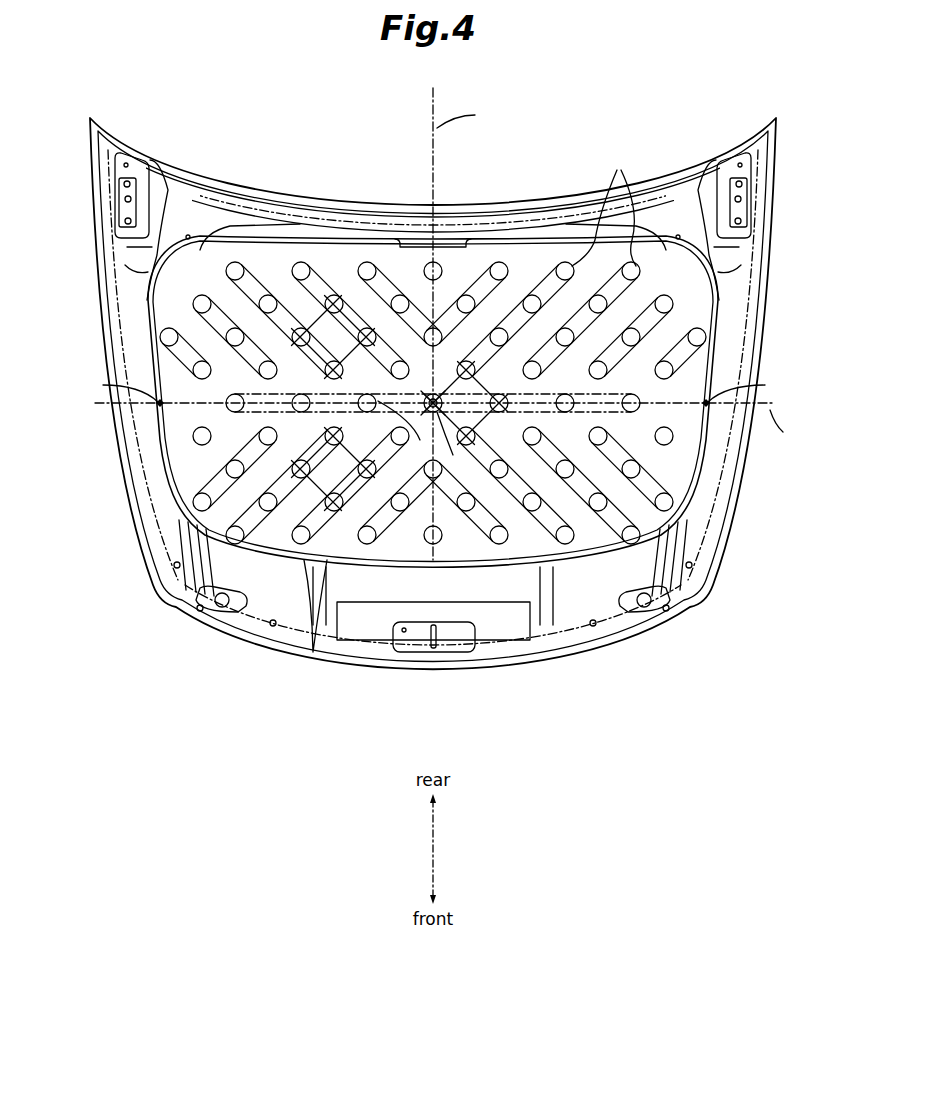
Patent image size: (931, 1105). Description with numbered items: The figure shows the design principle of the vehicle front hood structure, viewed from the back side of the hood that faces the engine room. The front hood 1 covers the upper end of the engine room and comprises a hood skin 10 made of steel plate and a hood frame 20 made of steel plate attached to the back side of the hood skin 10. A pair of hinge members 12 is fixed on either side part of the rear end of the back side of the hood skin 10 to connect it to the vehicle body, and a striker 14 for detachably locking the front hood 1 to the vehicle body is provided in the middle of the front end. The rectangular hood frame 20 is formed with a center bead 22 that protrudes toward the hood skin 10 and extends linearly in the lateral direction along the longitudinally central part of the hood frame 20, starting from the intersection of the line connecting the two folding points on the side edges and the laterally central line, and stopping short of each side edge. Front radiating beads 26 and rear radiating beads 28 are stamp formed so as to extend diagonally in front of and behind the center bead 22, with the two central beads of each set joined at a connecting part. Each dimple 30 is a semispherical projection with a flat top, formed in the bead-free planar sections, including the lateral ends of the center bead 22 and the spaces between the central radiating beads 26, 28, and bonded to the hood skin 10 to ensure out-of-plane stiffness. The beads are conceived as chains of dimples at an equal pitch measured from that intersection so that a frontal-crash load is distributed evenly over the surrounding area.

The front hood 1 is at (385, 176).
The hood skin 10 is at (740, 355).
The hinge members 12 is at (130, 212).
The striker 14 is at (433, 652).
The hood frame 20 is at (705, 451).
The center bead 22 is at (630, 412).
The front radiating beads 26 is at (275, 542).
The rear radiating beads 28 is at (555, 264).
The dimple 30 is at (426, 268).